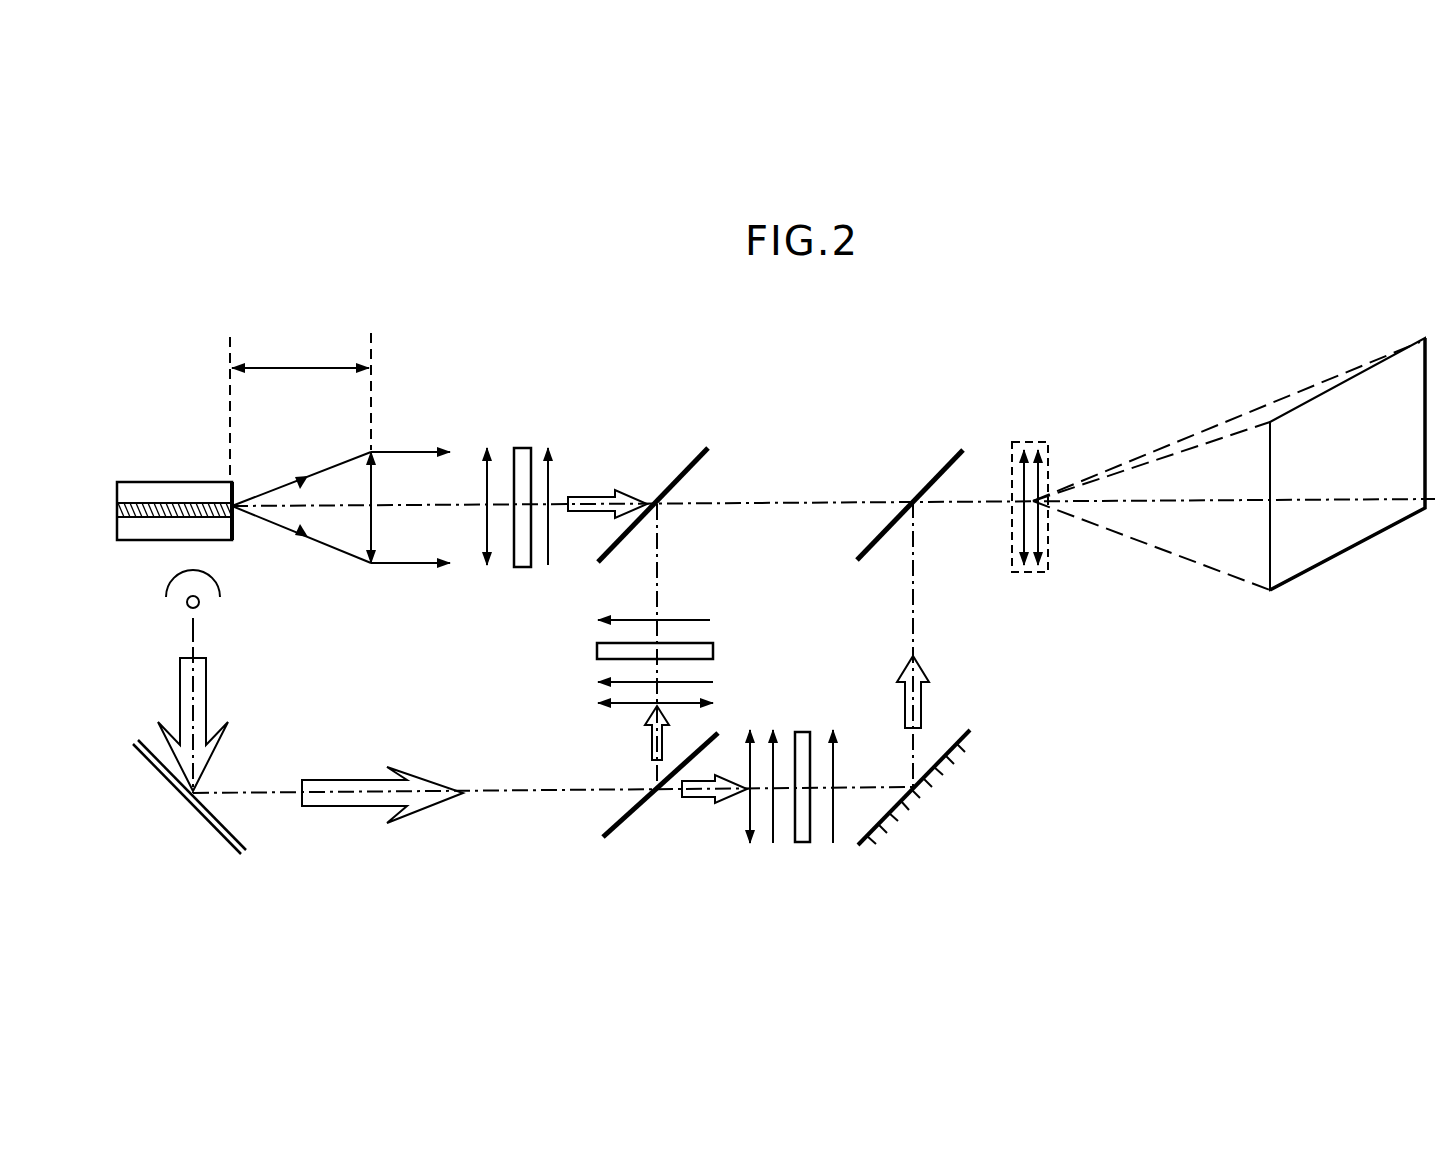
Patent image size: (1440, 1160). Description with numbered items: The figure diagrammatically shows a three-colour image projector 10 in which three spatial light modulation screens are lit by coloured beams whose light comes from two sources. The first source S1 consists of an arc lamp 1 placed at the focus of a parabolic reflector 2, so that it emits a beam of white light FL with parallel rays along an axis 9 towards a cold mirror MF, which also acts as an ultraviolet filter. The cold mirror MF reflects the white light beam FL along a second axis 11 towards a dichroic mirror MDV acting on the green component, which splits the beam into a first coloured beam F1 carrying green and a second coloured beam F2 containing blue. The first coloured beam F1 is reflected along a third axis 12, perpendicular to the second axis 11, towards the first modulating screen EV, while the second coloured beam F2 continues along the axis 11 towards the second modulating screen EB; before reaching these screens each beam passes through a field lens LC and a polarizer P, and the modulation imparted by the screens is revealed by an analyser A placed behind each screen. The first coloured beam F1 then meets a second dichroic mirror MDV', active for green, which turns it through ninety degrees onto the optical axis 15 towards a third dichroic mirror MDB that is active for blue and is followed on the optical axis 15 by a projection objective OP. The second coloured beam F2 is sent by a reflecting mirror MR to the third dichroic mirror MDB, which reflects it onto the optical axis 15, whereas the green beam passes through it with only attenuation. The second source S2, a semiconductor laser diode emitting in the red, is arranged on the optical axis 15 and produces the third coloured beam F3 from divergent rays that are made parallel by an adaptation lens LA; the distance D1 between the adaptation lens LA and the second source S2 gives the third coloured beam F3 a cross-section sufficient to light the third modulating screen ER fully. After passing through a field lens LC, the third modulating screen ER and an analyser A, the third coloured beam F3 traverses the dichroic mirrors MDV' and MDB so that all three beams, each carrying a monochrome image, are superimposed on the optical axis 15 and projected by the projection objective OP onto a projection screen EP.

The image projector 10 is at (160, 288).
The second light source S2 is at (125, 440).
The first light source S1 is at (128, 610).
The arc lamp 1 is at (218, 601).
The parabolic reflector 2 is at (165, 610).
The axis 9 is at (200, 632).
The distance D1 is at (289, 368).
The third coloured beam F3 is at (402, 452).
The adaptation lens LA is at (360, 533).
The field lens LC is at (487, 447).
The third modulating screen ER is at (520, 447).
The analyser A is at (548, 460).
The second dichroic mirror MDV' is at (669, 478).
The optical axis 15 is at (820, 502).
The third dichroic mirror MDB is at (946, 465).
The projection objective OP is at (1030, 441).
The projection screen EP is at (1430, 338).
The third axis 12 is at (658, 565).
The first modulating screen EV is at (597, 650).
The polarizer P is at (702, 682).
The first coloured beam F1 is at (650, 748).
The white light beam FL is at (207, 680).
The cold mirror MF is at (225, 838).
The second axis 11 is at (520, 792).
The dichroic mirror MDV is at (659, 805).
The second coloured beam F2 is at (700, 797).
The second modulating screen EB is at (801, 845).
The reflecting mirror MR is at (957, 745).